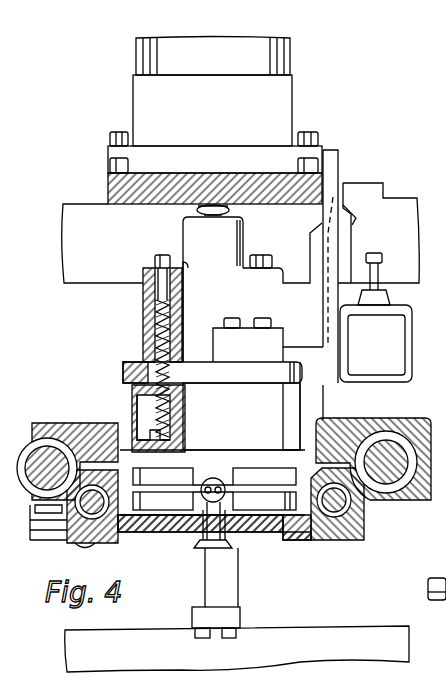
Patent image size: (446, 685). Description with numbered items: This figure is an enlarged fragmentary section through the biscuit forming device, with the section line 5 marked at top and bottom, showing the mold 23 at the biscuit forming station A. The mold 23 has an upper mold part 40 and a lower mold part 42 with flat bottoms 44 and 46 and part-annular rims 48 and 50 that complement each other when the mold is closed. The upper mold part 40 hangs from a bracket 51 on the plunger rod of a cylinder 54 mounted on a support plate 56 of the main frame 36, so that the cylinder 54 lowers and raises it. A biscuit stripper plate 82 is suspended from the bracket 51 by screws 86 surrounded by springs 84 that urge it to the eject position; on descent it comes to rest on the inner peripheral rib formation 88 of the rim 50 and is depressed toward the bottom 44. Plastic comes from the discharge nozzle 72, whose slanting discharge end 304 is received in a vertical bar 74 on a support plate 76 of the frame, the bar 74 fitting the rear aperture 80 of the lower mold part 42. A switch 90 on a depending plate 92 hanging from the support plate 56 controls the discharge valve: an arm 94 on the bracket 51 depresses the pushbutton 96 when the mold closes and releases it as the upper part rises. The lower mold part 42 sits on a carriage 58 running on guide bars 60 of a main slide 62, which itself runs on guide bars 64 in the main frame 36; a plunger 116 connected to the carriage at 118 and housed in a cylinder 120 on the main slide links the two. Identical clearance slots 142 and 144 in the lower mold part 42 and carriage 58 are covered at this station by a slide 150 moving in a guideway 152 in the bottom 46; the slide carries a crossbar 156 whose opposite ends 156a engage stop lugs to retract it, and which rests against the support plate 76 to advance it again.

The section line 5- 5 is at (213, 12).
The cylinder 54 is at (270, 97).
The support plate 56 is at (215, 186).
The depending plate 92 is at (333, 178).
The main frame 36 is at (410, 196).
The arm 94 is at (348, 213).
The pushbutton 96 is at (378, 278).
The switch 90 is at (400, 306).
The bracket 51 is at (250, 300).
The screws 86 is at (170, 312).
The springs 84 is at (156, 300).
The flat bottom 44 is at (146, 362).
The biscuit forming station A is at (114, 378).
The support plate 76 is at (262, 440).
The biscuit stripper plate 82 is at (194, 440).
The upper mold part 40 is at (128, 393).
The part-annular rim 48 is at (134, 422).
The main slide 62 is at (382, 426).
The guide bars 64 is at (46, 452).
The crossbar 156 is at (304, 424).
The mold 23 is at (356, 404).
The vertical bar 74 is at (209, 465).
The discharge nozzle 72 is at (242, 468).
The lower mold part 42 is at (280, 462).
The part-annular rim 50 is at (183, 480).
The rear aperture 80 is at (235, 520).
The guideway 152 is at (262, 515).
The slide 150 is at (275, 512).
The carriage 58 is at (303, 540).
The flat bottom 46 is at (160, 535).
The cylinder 120 is at (33, 545).
The operative connection 118 is at (45, 538).
The plunger 116 is at (30, 545).
The guide bars 60 is at (436, 578).
The opposite ends of crossbar 156a is at (138, 548).
The inner peripheral rib formation 88 is at (200, 555).
The clearance slot 142 is at (238, 556).
The clearance slot 144 is at (203, 560).
The slanting discharge end 304 is at (232, 565).